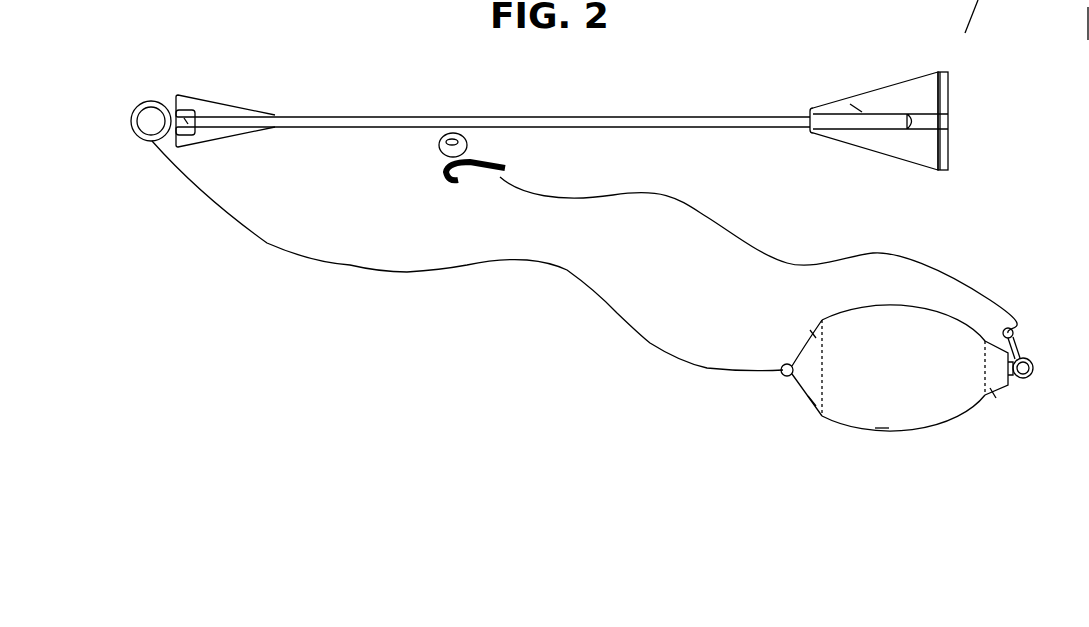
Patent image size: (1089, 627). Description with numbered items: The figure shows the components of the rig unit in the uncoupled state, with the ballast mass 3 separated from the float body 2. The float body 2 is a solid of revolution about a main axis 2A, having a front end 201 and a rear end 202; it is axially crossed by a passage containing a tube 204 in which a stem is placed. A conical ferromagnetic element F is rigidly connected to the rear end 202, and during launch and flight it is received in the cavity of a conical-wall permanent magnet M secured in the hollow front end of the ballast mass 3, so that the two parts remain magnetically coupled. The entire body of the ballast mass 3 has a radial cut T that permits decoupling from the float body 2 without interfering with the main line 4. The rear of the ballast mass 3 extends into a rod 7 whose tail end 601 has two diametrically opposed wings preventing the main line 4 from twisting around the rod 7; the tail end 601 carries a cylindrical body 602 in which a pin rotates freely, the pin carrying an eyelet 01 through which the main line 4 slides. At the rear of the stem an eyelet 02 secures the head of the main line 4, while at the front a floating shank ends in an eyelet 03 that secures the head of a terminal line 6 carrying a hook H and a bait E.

The eyelet 01 is at (147, 102).
The tail end of the rod 601 is at (240, 103).
The cylindrical body 602 is at (197, 137).
The rod 7 is at (627, 117).
The ballast mass 3 is at (870, 150).
The radial cut T is at (858, 110).
The permanent magnet M is at (948, 92).
The ferromagnetic element F is at (965, 33).
The tube 204 is at (1083, 40).
The bait E is at (442, 148).
The hook H is at (500, 167).
The terminal line 6 is at (703, 208).
The main line 4 is at (355, 265).
The float body 2 is at (913, 307).
The eyelet 02 is at (787, 376).
The eyelet 03 is at (1012, 330).
The rear end of the float body 202 is at (812, 402).
The main axis 2A is at (881, 425).
The front end of the float body 201 is at (993, 393).